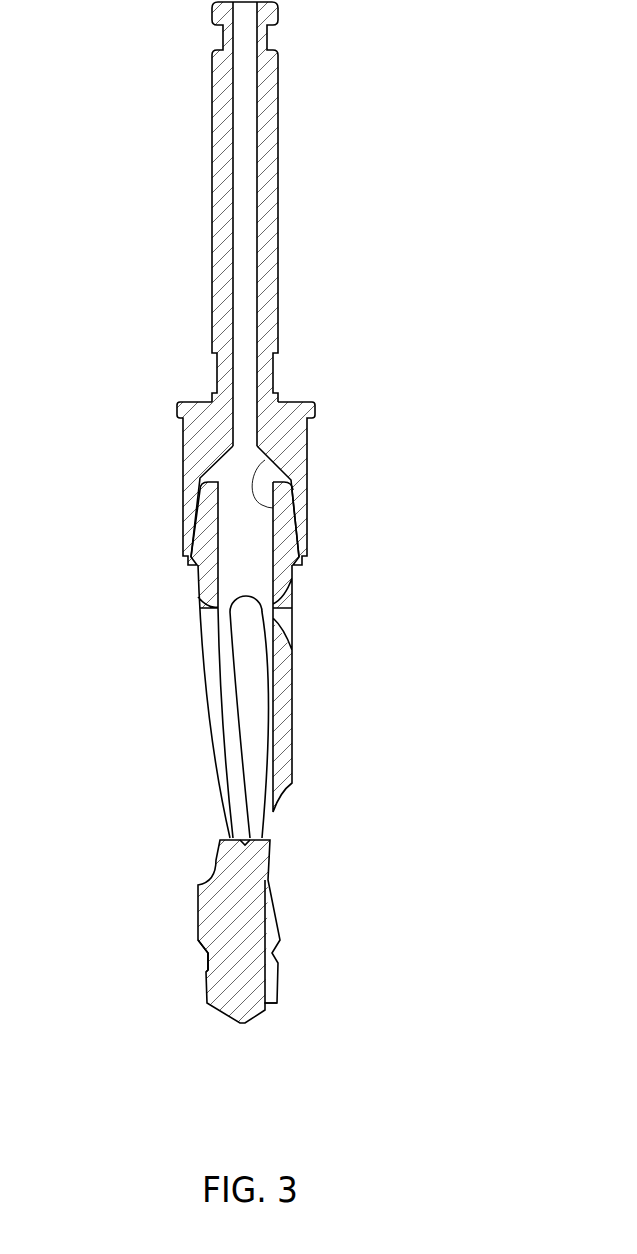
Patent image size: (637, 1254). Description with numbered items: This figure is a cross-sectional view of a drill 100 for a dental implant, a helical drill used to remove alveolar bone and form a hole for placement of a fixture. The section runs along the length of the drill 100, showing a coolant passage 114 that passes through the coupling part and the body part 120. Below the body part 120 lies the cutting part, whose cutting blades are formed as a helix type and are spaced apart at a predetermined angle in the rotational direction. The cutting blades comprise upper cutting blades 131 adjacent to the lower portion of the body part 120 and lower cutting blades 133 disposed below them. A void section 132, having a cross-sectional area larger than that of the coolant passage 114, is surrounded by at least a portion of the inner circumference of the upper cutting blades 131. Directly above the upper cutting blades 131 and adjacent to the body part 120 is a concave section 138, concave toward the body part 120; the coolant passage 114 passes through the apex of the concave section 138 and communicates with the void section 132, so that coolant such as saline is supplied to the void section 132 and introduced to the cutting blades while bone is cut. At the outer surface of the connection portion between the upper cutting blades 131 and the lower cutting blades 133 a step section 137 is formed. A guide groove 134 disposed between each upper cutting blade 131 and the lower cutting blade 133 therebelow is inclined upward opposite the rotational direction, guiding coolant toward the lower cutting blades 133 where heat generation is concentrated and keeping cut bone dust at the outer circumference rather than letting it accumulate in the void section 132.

The drill for a dental implant 100 is at (347, 78).
The coolant passage 114 is at (243, 148).
The body part 120 is at (327, 448).
The concave section 138 is at (273, 508).
The upper cutting blades 131 is at (227, 660).
The void section 132 is at (256, 697).
The lower cutting blades 133 is at (178, 946).
The guide groove 134 is at (210, 962).
The step section 137 is at (206, 962).